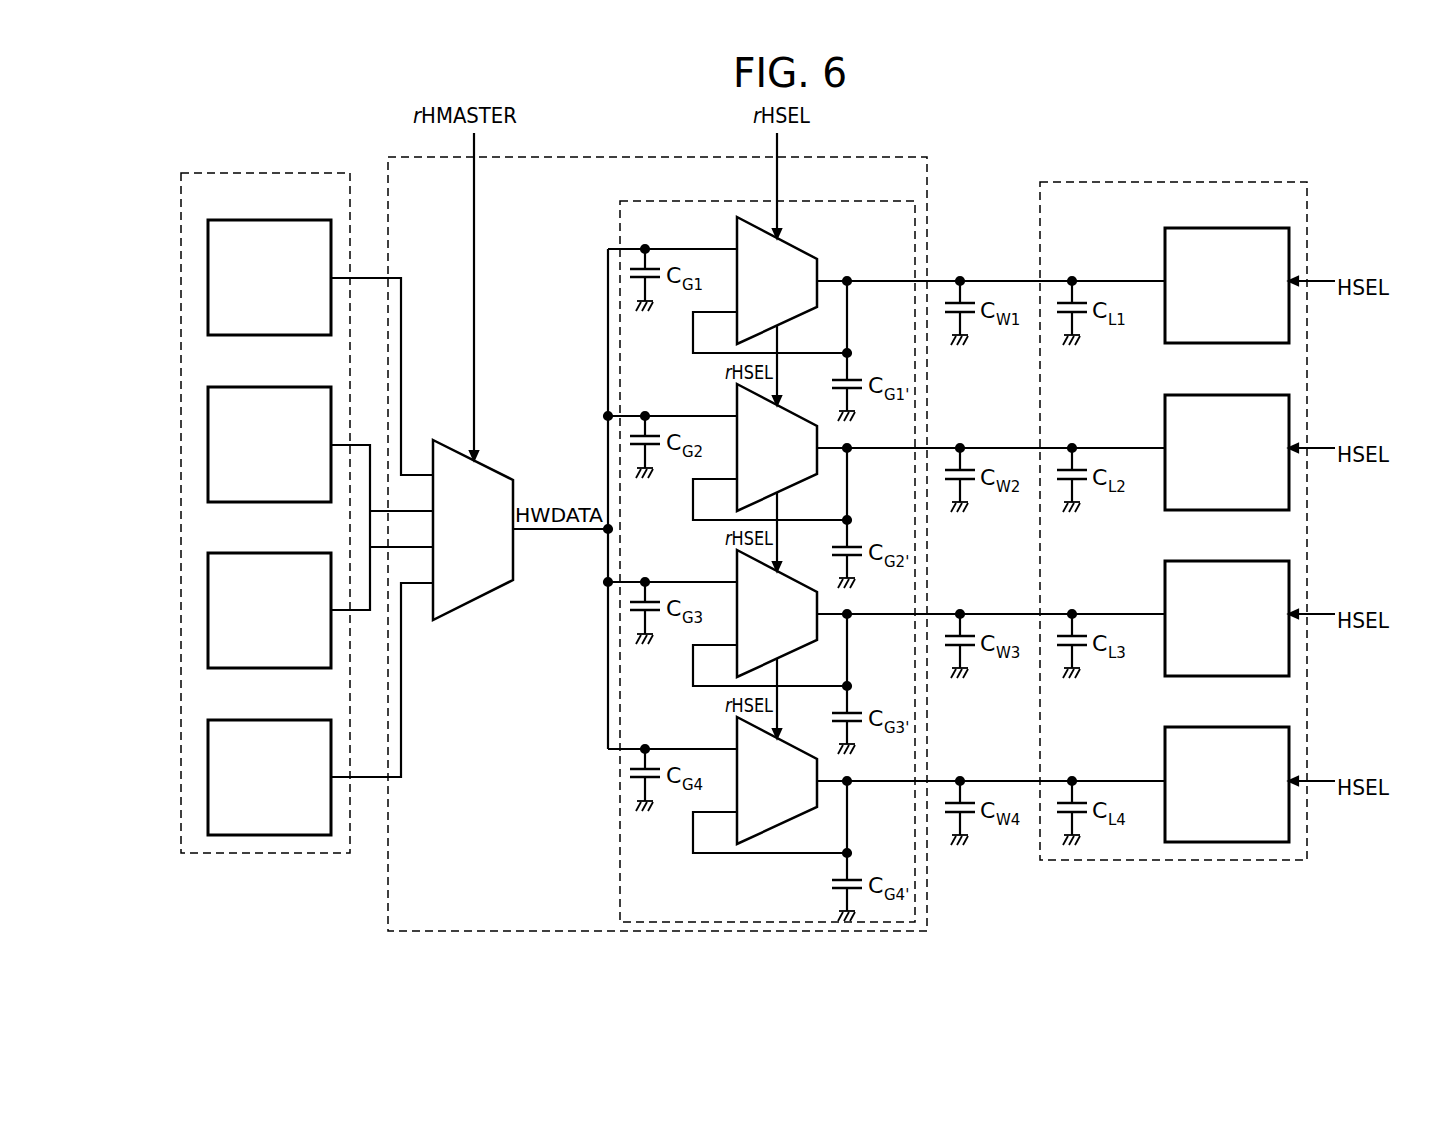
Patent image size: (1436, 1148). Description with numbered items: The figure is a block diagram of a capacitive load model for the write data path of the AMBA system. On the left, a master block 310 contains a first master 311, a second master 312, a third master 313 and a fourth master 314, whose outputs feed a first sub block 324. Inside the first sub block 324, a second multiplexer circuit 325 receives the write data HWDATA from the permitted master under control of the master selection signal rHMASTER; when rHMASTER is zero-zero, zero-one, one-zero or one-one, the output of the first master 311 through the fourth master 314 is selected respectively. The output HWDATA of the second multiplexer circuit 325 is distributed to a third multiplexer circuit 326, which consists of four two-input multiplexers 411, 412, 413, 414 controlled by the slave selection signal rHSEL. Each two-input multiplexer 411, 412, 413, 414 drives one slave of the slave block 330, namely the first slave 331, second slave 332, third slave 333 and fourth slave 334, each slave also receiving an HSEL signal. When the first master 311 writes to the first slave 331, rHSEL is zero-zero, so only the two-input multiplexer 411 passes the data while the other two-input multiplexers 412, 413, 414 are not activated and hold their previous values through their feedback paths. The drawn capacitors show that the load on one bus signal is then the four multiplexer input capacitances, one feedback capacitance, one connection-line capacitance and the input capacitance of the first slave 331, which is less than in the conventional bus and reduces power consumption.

The master block 310 is at (274, 173).
The first master 311 is at (272, 220).
The second master 312 is at (272, 387).
The third master 313 is at (272, 553).
The fourth master 314 is at (272, 720).
The first sub block 324 is at (678, 157).
The second multiplexer circuit 325 is at (500, 471).
The third multiplexer circuit 326 is at (850, 201).
The slave block 330 is at (1232, 182).
The first slave 331 is at (1230, 228).
The second slave 332 is at (1230, 395).
The third slave 333 is at (1230, 561).
The fourth slave 334 is at (1230, 727).
The two-input multiplexer 411 is at (737, 234).
The two-input multiplexer 412 is at (737, 401).
The two-input multiplexer 413 is at (737, 567).
The two-input multiplexer 414 is at (737, 734).